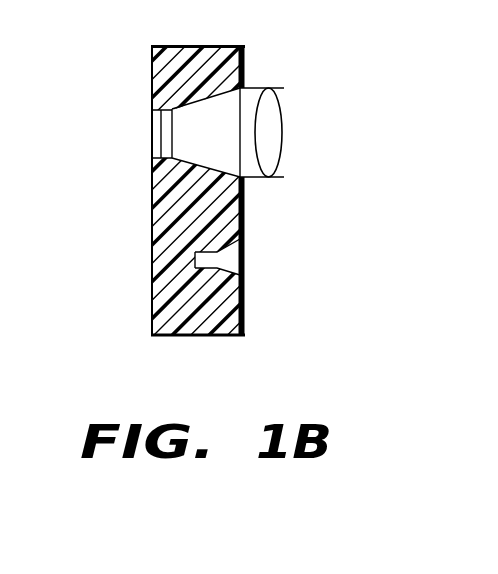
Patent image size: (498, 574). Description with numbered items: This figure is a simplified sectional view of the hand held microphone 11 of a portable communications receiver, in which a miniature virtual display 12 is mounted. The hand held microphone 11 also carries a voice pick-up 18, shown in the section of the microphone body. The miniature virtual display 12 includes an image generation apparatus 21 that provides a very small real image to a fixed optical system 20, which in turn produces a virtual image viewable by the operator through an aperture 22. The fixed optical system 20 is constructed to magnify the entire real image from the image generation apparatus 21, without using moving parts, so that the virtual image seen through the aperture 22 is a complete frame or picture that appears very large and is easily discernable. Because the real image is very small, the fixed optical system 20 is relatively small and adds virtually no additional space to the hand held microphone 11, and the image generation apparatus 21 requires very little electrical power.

The hand held microphone 11 is at (197, 48).
The miniature virtual display 12 is at (108, 332).
The voice pick-up 18 is at (232, 259).
The fixed optical system 20 is at (253, 180).
The image generation apparatus 21 is at (160, 132).
The aperture 22 is at (287, 121).